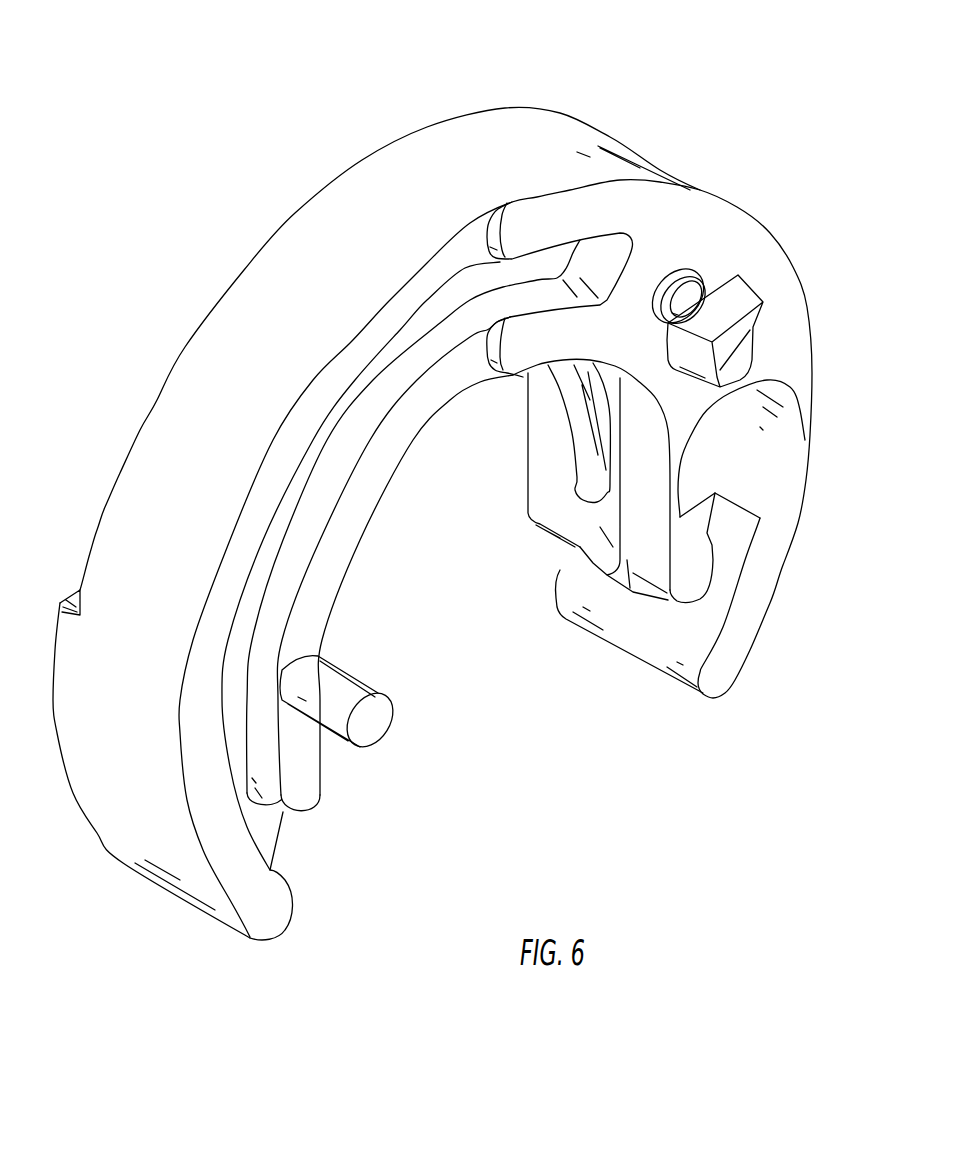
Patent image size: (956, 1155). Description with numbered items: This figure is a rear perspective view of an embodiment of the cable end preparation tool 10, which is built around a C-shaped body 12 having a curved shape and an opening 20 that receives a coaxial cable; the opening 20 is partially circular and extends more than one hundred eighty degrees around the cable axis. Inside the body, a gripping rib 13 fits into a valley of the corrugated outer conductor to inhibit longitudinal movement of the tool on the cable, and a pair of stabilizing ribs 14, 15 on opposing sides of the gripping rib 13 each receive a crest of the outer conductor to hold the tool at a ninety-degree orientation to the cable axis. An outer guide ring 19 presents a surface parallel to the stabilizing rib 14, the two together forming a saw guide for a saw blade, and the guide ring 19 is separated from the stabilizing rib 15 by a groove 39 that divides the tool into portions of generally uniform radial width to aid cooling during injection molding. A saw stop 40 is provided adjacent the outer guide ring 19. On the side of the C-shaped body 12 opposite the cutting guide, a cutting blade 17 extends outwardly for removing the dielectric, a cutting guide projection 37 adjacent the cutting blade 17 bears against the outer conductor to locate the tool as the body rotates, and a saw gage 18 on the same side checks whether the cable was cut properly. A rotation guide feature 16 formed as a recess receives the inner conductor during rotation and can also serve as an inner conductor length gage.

The cable end preparation tool 10 is at (233, 172).
The C-shaped body 12 is at (185, 347).
The gripping rib 13 is at (603, 555).
The stabilizing rib 14 is at (553, 510).
The stabilizing rib 15 is at (657, 560).
The rotation guide feature 16 is at (777, 440).
The cutting blade 17 is at (735, 297).
The saw gage 18 is at (377, 730).
The outer guide ring 19 is at (258, 930).
The opening 20 is at (437, 560).
The cutting guide projection 37 is at (682, 293).
The groove 39 is at (495, 277).
The saw stop 40 is at (73, 588).